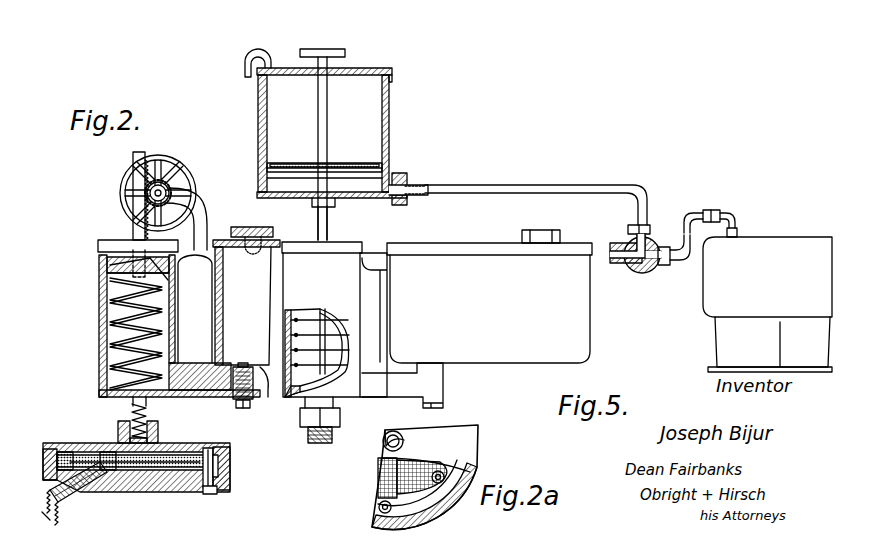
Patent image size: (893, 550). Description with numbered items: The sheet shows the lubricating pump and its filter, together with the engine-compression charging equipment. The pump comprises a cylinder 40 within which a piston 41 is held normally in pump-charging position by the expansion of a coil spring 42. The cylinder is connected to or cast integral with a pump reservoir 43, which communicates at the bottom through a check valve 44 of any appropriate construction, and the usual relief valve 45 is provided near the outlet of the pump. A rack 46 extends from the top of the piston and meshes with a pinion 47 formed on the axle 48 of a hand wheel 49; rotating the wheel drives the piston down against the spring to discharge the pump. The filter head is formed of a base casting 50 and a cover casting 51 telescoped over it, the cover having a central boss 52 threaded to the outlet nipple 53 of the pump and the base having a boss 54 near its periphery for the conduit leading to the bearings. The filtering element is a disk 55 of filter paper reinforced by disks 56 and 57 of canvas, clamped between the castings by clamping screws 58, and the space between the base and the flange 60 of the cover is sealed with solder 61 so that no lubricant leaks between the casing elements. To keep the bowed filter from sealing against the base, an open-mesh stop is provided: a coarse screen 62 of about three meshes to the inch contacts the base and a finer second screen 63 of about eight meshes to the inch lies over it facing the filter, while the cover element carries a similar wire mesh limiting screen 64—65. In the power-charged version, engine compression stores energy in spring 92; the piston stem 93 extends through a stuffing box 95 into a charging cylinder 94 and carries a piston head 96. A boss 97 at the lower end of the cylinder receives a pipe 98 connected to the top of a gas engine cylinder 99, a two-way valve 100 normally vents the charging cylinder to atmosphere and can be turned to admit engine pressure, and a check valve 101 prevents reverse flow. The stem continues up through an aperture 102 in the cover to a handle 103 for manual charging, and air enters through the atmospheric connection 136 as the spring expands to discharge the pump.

In FIG. 2, the cylinder 40 is at (99, 338).
In FIG. 2, the piston 41 is at (107, 266).
In FIG. 2, the coil spring 42 is at (118, 303).
In FIG. 2, the pump reservoir 43 is at (246, 296).
In FIG. 2, the check valve 44 is at (256, 398).
In FIG. 2, the relief valve 45 is at (130, 408).
In FIG. 2, the rack 46 is at (138, 186).
In FIG. 2, the pinion 47 is at (163, 182).
In FIG. 2, the axle 48 is at (170, 178).
In FIG. 2, the hand wheel 49 is at (198, 190).
In FIG. 2, the base casting 50 is at (196, 492).
In FIG. 2, the cover casting 51 is at (184, 455).
In FIG. 2, the central boss 52 is at (158, 424).
In FIG. 2, the outlet nipple 53 is at (130, 420).
In FIG. 2, the boss 54 is at (88, 496).
In FIG. 2, the disk of filter paper 55 is at (62, 452).
In FIG. 2, the canvas disk 56 is at (210, 452).
In FIG. 2, the canvas disk 57 is at (163, 490).
In FIG. 2, the clamping screws 58 is at (217, 490).
In FIG. 2A, the clamping screws 58 is at (379, 507).
In FIG. 2, the flange 60 is at (230, 460).
In FIG. 2, the solder 61 is at (48, 500).
In FIG. 2A, the screen 62 is at (382, 478).
In FIG. 2A, the second screen 63 is at (444, 476).
In FIG. 2, the wire mesh limiting screen 64 is at (88, 452).
In FIG. 2, the wire mesh limiting screen 65 is at (110, 452).
In FIG. 5, the spring 92 is at (306, 320).
In FIG. 5, the piston stem 93 is at (318, 216).
In FIG. 5, the cylinder 94 is at (389, 142).
In FIG. 5, the stuffing box 95 is at (335, 206).
In FIG. 5, the piston head 96 is at (300, 163).
In FIG. 5, the boss 97 is at (407, 178).
In FIG. 5, the pipe 98 is at (462, 193).
In FIG. 5, the gas engine cylinder 99 is at (762, 248).
In FIG. 5, the two-way valve 100 is at (638, 272).
In FIG. 5, the check valve 101 is at (712, 210).
In FIG. 5, the aperture 102 is at (328, 78).
In FIG. 5, the handle 103 is at (331, 49).
In FIG. 5, the atmospheric connection 136 is at (262, 52).